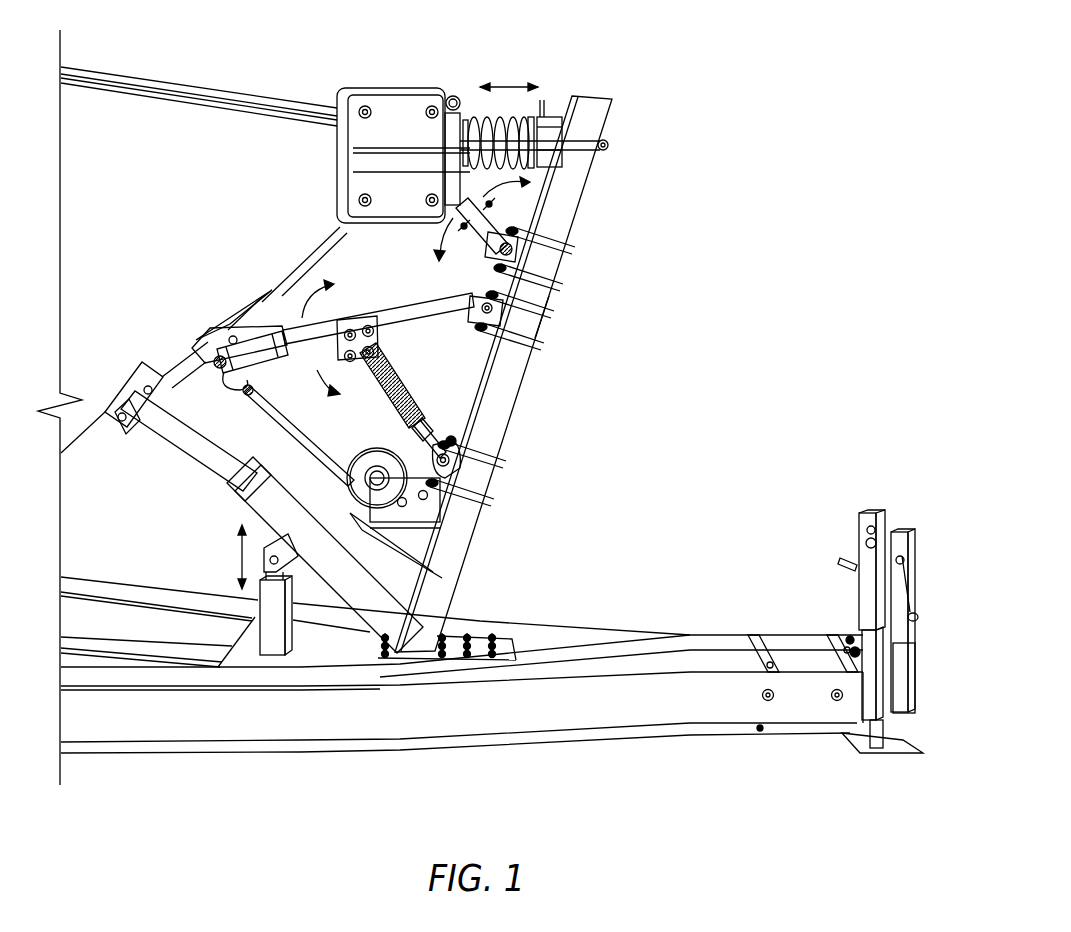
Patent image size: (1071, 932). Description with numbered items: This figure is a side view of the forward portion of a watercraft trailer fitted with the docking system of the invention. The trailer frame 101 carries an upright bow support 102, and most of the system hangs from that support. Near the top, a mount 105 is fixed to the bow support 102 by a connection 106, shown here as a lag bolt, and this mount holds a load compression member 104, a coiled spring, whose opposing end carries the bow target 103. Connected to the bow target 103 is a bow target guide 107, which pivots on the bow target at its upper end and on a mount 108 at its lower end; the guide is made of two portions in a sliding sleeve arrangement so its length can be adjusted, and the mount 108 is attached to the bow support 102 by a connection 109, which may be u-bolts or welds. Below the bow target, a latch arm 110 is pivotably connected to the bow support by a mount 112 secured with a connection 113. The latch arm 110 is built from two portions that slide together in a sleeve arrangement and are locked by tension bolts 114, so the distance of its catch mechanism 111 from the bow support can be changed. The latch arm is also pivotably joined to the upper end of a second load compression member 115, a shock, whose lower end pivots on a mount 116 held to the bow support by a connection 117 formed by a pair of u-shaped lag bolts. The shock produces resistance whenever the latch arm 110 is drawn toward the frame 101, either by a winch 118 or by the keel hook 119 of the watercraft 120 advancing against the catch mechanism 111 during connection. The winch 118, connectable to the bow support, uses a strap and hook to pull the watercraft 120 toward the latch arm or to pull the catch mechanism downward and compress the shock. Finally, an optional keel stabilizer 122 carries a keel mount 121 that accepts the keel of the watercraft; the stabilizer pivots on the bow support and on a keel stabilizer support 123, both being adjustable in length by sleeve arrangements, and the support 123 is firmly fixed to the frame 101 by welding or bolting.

The frame 101 is at (623, 637).
The bow support 102 is at (440, 585).
The bow target 103 is at (398, 100).
The load compression member 104 is at (512, 82).
The mount 105 is at (550, 128).
The connection 106 is at (608, 140).
The bow target guide 107 is at (490, 225).
The mount 108 is at (487, 262).
The connection 109 is at (566, 248).
The latch arm 110 is at (420, 308).
The catch mechanism 111 is at (250, 372).
The mount 112 is at (548, 328).
The connection 113 is at (515, 306).
The tension bolts 114 is at (352, 322).
The load compression member 115 is at (415, 373).
The mount 116 is at (446, 438).
The connection 117 is at (505, 456).
The winch 118 is at (428, 517).
The keel hook 119 is at (217, 340).
The watercraft 120 is at (195, 90).
The keel mount 121 is at (163, 428).
The keel stabilizer 122 is at (245, 500).
The keel stabilizer support 123 is at (278, 628).